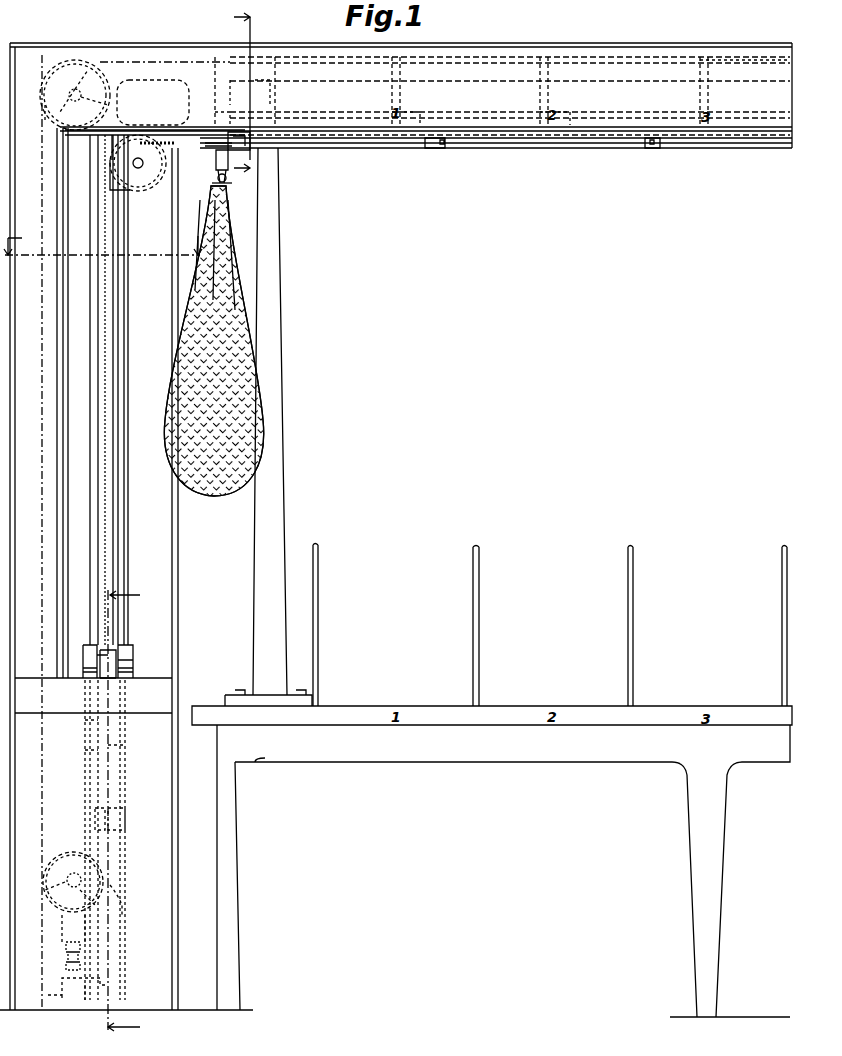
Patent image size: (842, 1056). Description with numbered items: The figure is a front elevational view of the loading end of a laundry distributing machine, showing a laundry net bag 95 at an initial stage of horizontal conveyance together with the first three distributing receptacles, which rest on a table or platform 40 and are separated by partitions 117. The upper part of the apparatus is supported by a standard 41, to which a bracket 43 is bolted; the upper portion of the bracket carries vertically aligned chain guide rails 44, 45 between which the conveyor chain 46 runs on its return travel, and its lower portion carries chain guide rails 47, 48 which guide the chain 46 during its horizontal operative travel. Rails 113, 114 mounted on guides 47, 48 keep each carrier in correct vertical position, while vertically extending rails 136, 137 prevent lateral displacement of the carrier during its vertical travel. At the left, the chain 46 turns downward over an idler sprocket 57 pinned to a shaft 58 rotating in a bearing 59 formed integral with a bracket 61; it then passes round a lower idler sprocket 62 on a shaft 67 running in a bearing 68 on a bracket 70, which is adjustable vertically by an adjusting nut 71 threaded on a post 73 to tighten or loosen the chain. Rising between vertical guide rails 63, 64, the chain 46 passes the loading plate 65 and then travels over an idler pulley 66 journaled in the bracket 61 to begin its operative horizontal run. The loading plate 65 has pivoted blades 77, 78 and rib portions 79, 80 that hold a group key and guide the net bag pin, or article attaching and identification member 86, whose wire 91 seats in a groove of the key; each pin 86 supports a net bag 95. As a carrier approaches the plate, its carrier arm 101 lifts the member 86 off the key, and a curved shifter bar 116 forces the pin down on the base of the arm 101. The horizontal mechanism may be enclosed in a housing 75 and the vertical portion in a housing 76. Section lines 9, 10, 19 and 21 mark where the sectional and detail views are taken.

The section line 9- 9 is at (103, 252).
The section line 10- 10 is at (136, 812).
The section line 19- 19 is at (254, 101).
The section line 21- 21 is at (119, 642).
The table or platform 40 is at (484, 762).
The standard 41 is at (272, 355).
The bracket 43 is at (290, 50).
The chain guide rail 44 is at (570, 62).
The chain guide rail 45 is at (595, 82).
The conveyor chain 46 is at (652, 62).
The chain guide rail 47 is at (472, 113).
The chain guide rail 48 is at (470, 148).
The idler sprocket 57 is at (74, 60).
The shaft 58 is at (54, 86).
The bearing 59 is at (46, 113).
The bracket 61 is at (153, 102).
The idler sprocket 62 is at (46, 912).
The guide rail 63 is at (93, 812).
The guide rail 64 is at (115, 815).
The loading plate 65 is at (124, 662).
The idler pulley 66 is at (144, 170).
The shaft 67 is at (45, 881).
The bearing 68 is at (124, 910).
The bracket 70 is at (66, 957).
The adjusting nut 71 is at (68, 944).
The post 73 is at (62, 982).
The housing 75 is at (727, 52).
The housing 76 is at (160, 541).
The pivoted blade 77 is at (85, 666).
The pivoted blade 78 is at (130, 678).
The rib portion 79 is at (97, 655).
The rib portion 80 is at (130, 655).
The article attaching and identification member 86 is at (216, 152).
The wire 91 is at (213, 174).
The laundry net bag 95 is at (232, 420).
The carrier arm 101 is at (232, 150).
The rail 113 is at (734, 110).
The rail 114 is at (633, 148).
The shifter bar 116 is at (677, 148).
The partition 117 is at (318, 546).
The rail 136 is at (93, 538).
The rail 137 is at (123, 537).